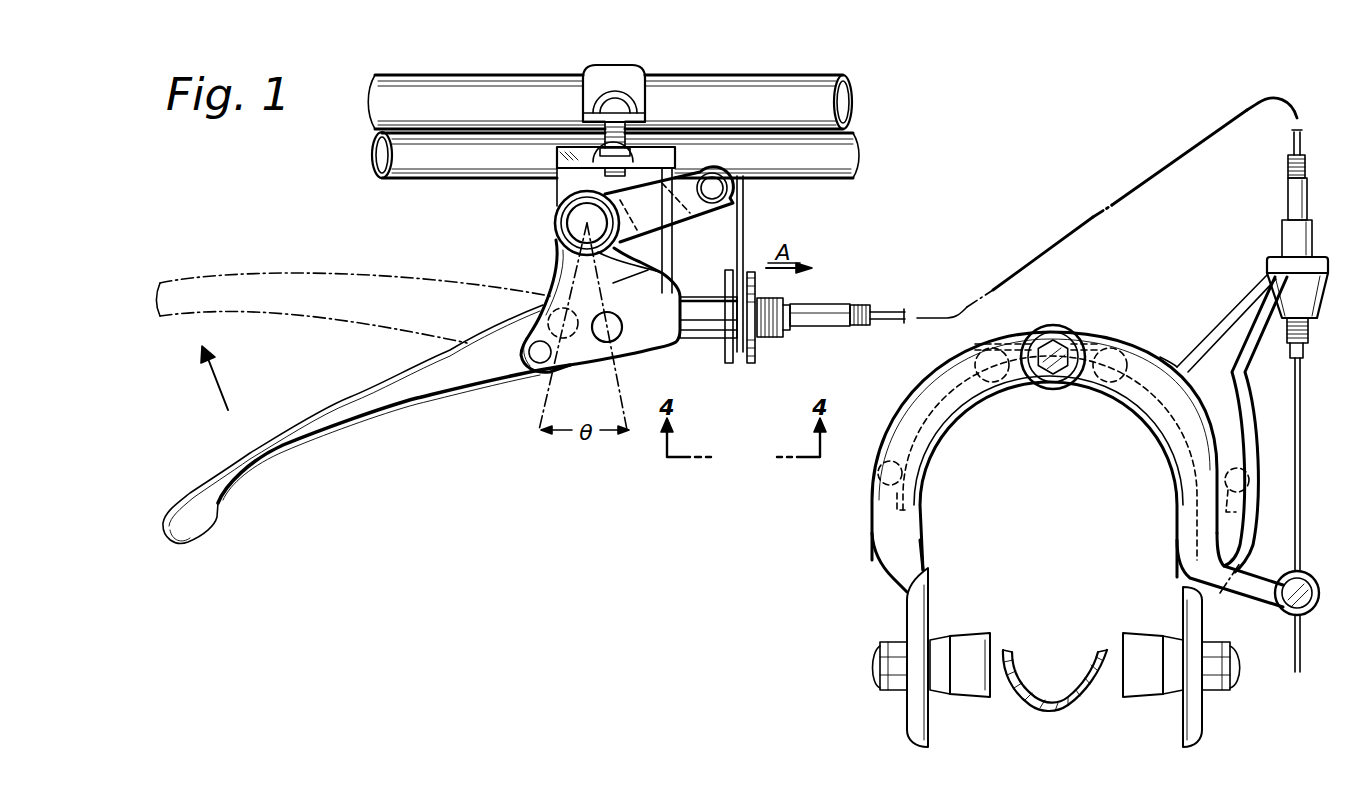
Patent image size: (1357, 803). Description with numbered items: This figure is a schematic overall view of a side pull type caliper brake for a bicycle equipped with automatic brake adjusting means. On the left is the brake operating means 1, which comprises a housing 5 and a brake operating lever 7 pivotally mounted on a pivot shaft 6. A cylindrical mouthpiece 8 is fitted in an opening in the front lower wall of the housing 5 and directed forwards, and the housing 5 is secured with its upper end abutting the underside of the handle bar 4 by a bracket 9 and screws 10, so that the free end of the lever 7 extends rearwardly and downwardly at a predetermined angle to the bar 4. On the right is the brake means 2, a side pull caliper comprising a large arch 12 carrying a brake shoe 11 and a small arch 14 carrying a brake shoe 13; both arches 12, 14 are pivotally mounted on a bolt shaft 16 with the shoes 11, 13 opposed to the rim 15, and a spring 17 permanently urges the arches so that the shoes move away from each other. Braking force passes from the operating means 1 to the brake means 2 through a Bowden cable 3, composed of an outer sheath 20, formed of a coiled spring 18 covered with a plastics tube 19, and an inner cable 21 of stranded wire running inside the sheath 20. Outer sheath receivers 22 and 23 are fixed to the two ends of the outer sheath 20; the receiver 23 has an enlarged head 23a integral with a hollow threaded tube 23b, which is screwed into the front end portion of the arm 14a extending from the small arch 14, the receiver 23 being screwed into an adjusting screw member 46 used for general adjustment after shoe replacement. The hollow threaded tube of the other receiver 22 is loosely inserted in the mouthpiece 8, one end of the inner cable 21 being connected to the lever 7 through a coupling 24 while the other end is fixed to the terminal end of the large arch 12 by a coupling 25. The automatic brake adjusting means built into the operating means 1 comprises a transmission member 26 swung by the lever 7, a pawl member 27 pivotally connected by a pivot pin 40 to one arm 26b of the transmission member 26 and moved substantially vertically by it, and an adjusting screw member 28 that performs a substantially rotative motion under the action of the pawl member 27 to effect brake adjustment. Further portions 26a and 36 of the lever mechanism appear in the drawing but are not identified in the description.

The brake operating means 1 is at (470, 400).
The brake means 2 is at (1136, 334).
The Bowden cable 3 is at (1158, 172).
The handle bar 4 is at (410, 180).
The housing 5 is at (557, 186).
The pivot shaft 6 is at (575, 223).
The brake operating lever 7 is at (312, 432).
The cylindrical mouthpiece 8 is at (706, 334).
The bracket 9 is at (596, 84).
The screws 10 is at (635, 130).
The brake shoe 11 is at (975, 692).
The large arch 12 is at (884, 566).
The brake shoe 13 is at (1150, 692).
The small arch 14 is at (1258, 470).
The arm 14a is at (1230, 318).
The rim 15 is at (1078, 697).
The bolt shaft 16 is at (1060, 348).
The spring 17 is at (934, 426).
The coiled spring 18 is at (866, 304).
The plastics tube 19 is at (842, 302).
The outer sheath 20 is at (845, 256).
The inner cable 21 is at (893, 322).
The outer sheath receiver 22 is at (771, 338).
The outer sheath receiver 23 is at (1314, 244).
The enlarged head 23a is at (1283, 236).
The hollow threaded tube 23b is at (1287, 343).
The coupling 24 is at (618, 342).
The coupling 25 is at (1303, 612).
The transmission member 26 is at (549, 292).
The lever arm lobe 26a is at (528, 330).
The arm 26b is at (690, 212).
The pawl member 27 is at (745, 225).
The adjusting screw member 28 is at (735, 368).
The lever hole 36 is at (540, 364).
The pivot pin 40 is at (727, 190).
The adjusting screw member 46 is at (1267, 268).